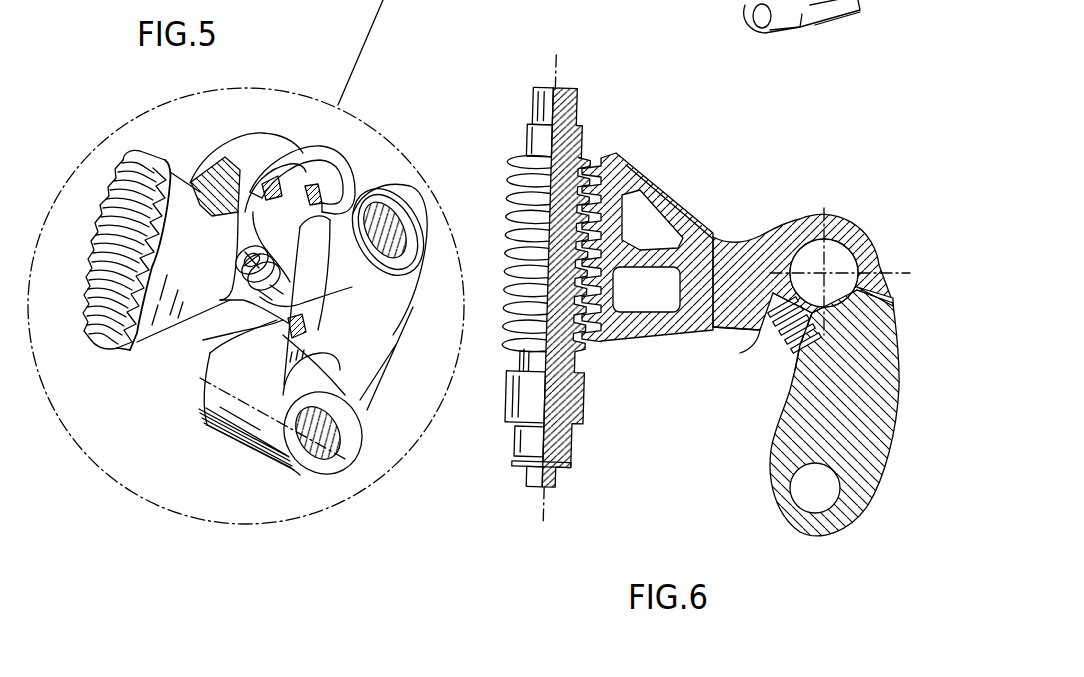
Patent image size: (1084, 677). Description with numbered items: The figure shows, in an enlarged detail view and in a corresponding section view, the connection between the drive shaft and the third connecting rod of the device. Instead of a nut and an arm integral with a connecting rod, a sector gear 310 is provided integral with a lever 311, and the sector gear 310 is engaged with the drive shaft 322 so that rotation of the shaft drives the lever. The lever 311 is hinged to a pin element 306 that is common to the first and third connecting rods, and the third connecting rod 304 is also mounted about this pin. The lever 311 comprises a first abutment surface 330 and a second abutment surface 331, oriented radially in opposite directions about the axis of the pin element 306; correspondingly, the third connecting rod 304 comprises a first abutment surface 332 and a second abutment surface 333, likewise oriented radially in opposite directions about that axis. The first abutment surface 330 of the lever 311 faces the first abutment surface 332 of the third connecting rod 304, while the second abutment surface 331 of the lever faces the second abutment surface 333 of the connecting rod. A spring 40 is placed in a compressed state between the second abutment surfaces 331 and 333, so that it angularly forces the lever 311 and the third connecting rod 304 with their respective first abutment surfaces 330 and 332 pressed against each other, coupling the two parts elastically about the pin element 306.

In FIG. 5, the spring 40 is at (218, 327).
In FIG. 6, the spring 40 is at (777, 335).
In FIG. 5, the third connecting rod 304 is at (370, 397).
In FIG. 6, the third connecting rod 304 is at (897, 415).
In FIG. 6, the pin element 306 is at (837, 250).
In FIG. 5, the sector gear 310 is at (103, 333).
In FIG. 6, the sector gear 310 is at (645, 167).
In FIG. 5, the lever 311 is at (250, 133).
In FIG. 6, the lever 311 is at (737, 240).
In FIG. 6, the drive shaft 322 is at (522, 358).
In FIG. 5, the first abutment surface of lever 330 is at (337, 153).
In FIG. 6, the first abutment surface of lever 330 is at (917, 312).
In FIG. 6, the second abutment surface of lever 331 is at (743, 328).
In FIG. 5, the first abutment surface of third connecting rod 332 is at (420, 217).
In FIG. 6, the first abutment surface of third connecting rod 332 is at (865, 288).
In FIG. 5, the second abutment surface of third connecting rod 333 is at (330, 340).
In FIG. 6, the second abutment surface of third connecting rod 333 is at (800, 353).